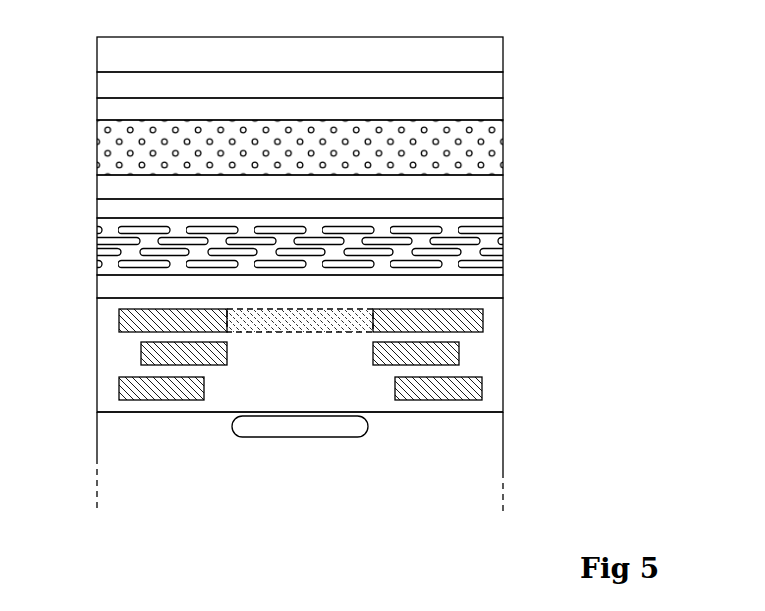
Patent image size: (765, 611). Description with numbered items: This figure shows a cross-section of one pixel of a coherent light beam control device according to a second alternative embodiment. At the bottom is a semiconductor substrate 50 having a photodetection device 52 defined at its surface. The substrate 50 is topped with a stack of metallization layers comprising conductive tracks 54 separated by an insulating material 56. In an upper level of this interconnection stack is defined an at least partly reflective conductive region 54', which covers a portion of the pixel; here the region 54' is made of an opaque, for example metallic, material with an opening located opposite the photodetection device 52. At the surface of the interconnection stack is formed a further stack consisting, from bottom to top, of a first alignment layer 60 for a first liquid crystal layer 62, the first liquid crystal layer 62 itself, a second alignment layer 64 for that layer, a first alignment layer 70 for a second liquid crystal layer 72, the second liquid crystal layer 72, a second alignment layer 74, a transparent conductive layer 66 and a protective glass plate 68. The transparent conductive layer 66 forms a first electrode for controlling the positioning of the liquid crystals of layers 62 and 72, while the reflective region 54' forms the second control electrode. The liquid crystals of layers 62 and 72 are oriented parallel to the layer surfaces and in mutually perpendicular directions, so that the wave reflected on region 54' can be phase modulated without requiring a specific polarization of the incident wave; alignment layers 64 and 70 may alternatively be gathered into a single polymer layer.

The semiconductor substrate 50 is at (487, 465).
The photodetection device 52 is at (247, 426).
The conductive tracks 54 is at (297, 371).
The at least partly reflective conductive region 54' is at (339, 315).
The insulating material 56 is at (490, 345).
The first alignment layer for a first liquid crystal layer 60 is at (487, 289).
The first liquid crystal layer 62 is at (490, 243).
The second alignment layer for first liquid crystal layer 64 is at (487, 210).
The first alignment layer for a second liquid crystal layer 70 is at (487, 185).
The second liquid crystal layer 72 is at (490, 149).
The second alignment layer for second liquid crystal layer 74 is at (487, 110).
The transparent conductive layer 66 is at (487, 85).
The protective glass plate 68 is at (487, 53).